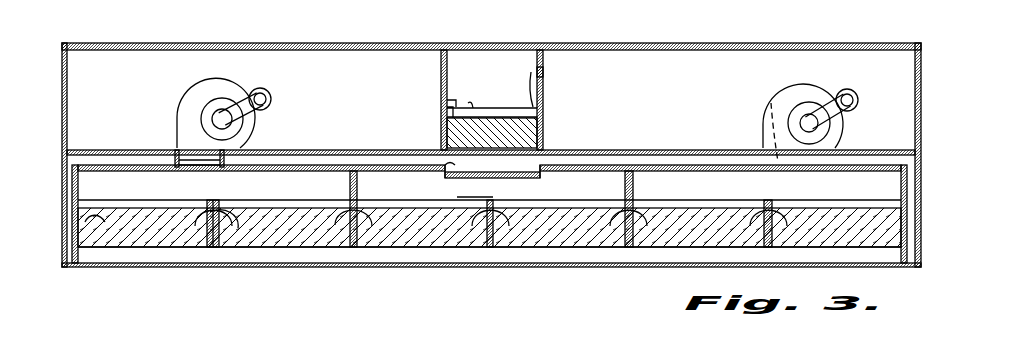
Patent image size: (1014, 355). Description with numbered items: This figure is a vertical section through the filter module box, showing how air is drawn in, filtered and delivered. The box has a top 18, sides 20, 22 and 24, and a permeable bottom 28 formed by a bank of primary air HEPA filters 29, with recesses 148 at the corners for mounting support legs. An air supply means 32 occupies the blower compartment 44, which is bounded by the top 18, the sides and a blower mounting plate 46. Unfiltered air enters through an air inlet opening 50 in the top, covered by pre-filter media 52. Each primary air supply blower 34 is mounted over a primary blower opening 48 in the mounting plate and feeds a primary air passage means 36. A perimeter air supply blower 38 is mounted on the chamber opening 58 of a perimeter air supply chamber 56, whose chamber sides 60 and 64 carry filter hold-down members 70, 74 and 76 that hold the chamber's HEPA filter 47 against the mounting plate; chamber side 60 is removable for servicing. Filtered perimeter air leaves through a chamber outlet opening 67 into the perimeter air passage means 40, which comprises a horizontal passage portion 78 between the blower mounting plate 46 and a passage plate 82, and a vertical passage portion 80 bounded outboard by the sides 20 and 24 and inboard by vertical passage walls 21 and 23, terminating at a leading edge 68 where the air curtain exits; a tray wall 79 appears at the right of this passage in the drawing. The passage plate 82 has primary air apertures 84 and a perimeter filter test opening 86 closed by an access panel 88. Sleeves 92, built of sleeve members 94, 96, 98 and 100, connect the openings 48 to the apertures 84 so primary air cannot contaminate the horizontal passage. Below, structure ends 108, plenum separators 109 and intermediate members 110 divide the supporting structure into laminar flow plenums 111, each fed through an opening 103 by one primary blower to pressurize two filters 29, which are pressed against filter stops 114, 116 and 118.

The top 18 is at (652, 43).
The side 20 is at (62, 107).
The vertical passage wall 21 is at (72, 182).
The side 22 is at (352, 8).
The vertical passage wall 23 is at (922, 173).
The side 24 is at (914, 72).
The permeable bottom 28 is at (329, 269).
The primary air HEPA filters 29 is at (153, 240).
The air supply means 32 is at (374, 97).
The primary air supply blower 34 is at (197, 87).
The primary air passage means 36 is at (226, 186).
The perimeter air supply blower 38 is at (617, 100).
The perimeter air passage means 40 is at (362, 145).
The blower compartment 44 is at (107, 65).
The blower mounting plate 46 is at (100, 147).
The insulating block 47 is at (483, 127).
The primary blower opening 48 is at (188, 147).
The air inlet opening 50 is at (143, 43).
The filter media 52 is at (223, 43).
The perimeter air supply chamber 56 is at (482, 42).
The chamber opening 58 is at (553, 72).
The chamber side 60 is at (441, 75).
The chamber side 64 is at (535, 70).
The chamber outlet opening 67 is at (600, 133).
The leading edge 68 is at (68, 279).
The filter hold-down member 70 is at (447, 103).
The filter hold-down member 74 is at (527, 97).
The filter hold-down member 76 is at (473, 108).
The horizontal passage portion 78 is at (907, 150).
The tray wall 79 is at (844, 217).
The vertical passage portion 80 is at (927, 199).
The passage plate 82 is at (683, 167).
The primary air aperture 84 is at (187, 180).
The perimeter filter test opening 86 is at (437, 175).
The access panel 88 is at (517, 177).
The sleeve 92 is at (847, 143).
The sleeve member 94 is at (165, 202).
The sleeve member 96 is at (765, 105).
The sleeve member 98 is at (263, 147).
The sleeve member 100 is at (243, 140).
The opening 103 is at (380, 183).
The structure end 108 is at (914, 230).
The plenum separator 109 is at (601, 183).
The intermediate member 110 is at (210, 242).
The laminar flow plenum 111 is at (712, 147).
The filter stop 114 is at (313, 207).
The filter stop 116 is at (97, 180).
The filter stop 118 is at (489, 227).
The recess 148 is at (491, 10).